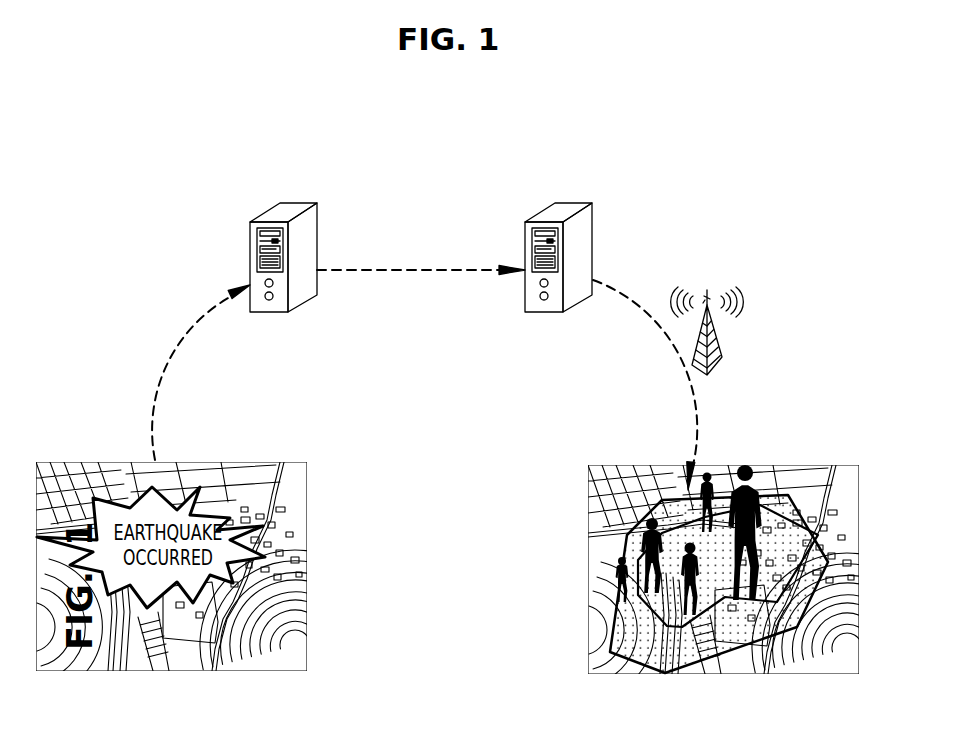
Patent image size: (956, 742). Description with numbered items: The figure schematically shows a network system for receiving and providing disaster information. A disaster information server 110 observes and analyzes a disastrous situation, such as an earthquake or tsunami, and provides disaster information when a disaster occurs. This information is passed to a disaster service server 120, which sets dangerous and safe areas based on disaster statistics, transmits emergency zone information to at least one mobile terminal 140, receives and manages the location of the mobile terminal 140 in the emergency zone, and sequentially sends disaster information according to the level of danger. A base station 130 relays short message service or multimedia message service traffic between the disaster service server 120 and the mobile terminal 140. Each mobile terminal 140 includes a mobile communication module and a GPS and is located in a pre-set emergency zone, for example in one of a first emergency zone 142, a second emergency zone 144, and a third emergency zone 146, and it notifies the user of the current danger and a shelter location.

The disaster information server 110 is at (298, 203).
The disaster service server 120 is at (573, 203).
The base station 130 is at (710, 285).
The mobile terminal 140 is at (763, 564).
The first emergency zone 142 is at (722, 627).
The second emergency zone 144 is at (672, 625).
The third emergency zone 146 is at (648, 650).